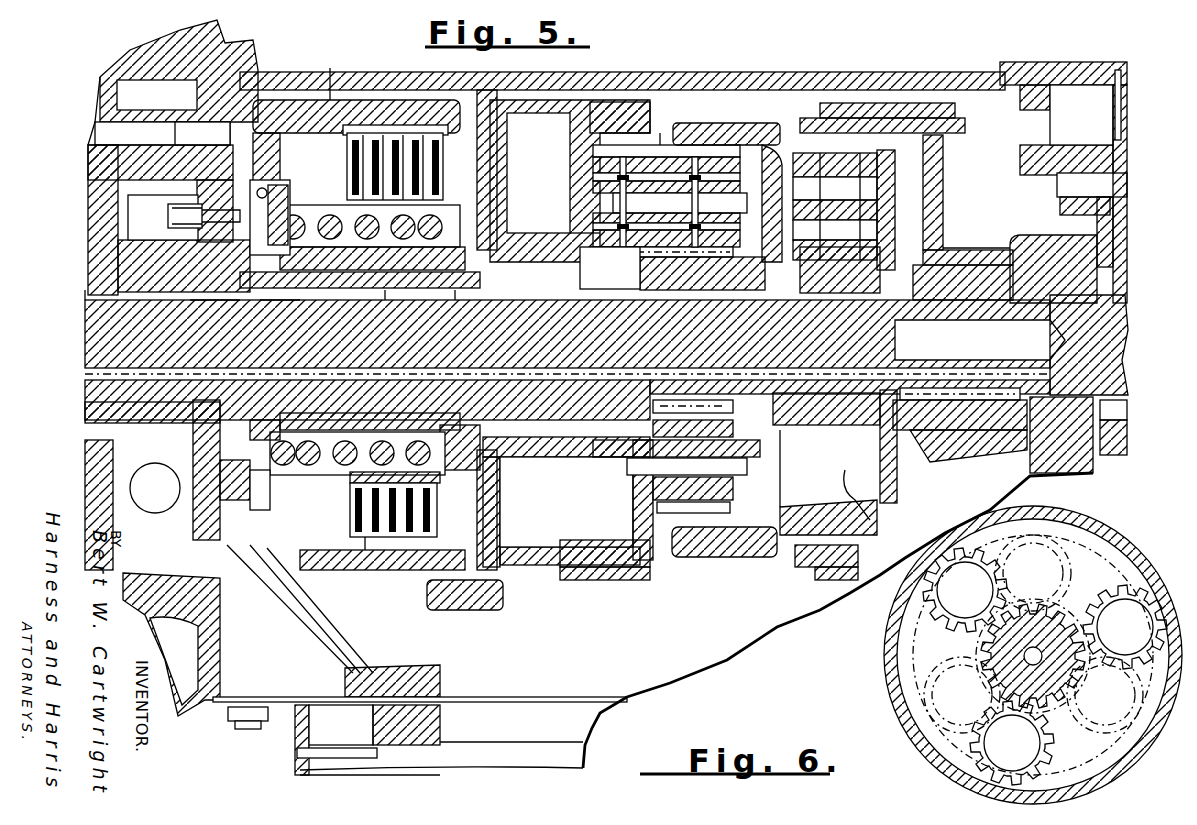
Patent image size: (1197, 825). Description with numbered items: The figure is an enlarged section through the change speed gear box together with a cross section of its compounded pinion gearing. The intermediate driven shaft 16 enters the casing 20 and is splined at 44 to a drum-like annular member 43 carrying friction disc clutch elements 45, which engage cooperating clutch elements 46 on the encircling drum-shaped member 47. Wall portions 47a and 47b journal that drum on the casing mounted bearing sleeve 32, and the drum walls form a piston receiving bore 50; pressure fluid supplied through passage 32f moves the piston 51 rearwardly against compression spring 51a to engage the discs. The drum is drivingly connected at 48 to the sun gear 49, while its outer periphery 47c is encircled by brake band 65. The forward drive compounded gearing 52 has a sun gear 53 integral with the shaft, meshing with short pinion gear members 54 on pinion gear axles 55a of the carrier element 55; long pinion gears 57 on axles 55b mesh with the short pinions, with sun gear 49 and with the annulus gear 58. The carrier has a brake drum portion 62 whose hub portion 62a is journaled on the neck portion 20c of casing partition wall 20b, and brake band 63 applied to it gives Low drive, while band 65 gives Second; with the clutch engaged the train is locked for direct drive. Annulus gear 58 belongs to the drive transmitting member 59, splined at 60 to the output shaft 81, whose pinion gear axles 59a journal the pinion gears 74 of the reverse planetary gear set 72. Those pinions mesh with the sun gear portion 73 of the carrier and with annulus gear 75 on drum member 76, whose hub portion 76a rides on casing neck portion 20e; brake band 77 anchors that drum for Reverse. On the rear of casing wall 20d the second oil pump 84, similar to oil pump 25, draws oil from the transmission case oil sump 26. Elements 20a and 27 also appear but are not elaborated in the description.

In FIG. 5, the intermediate driven shaft 16 is at (85, 322).
In FIG. 5, the casing 20 is at (445, 82).
In FIG. 5, the housing portion 20a is at (196, 97).
In FIG. 5, the casing partition wall 20b is at (504, 596).
In FIG. 5, the axially extending neck portion 20c is at (610, 268).
In FIG. 5, the casing wall 20d is at (1020, 468).
In FIG. 5, the casing neck portion 20e is at (1022, 248).
In FIG. 5, the oil pump 25 is at (82, 232).
In FIG. 5, the transmission case oil sump 26 is at (442, 768).
In FIG. 5, the bracket 27 is at (330, 682).
In FIG. 5, the casing mounted bearing sleeve 32 is at (209, 312).
In FIG. 5, the passage 32f is at (274, 312).
In FIG. 5, the drum-like annular member 43 is at (345, 214).
In FIG. 5, the spline 44 is at (390, 292).
In FIG. 5, the friction disc clutch elements 45 is at (402, 540).
In FIG. 5, the cooperating clutch elements 46 is at (385, 128).
In FIG. 5, the drum-shaped member 47 is at (294, 121).
In FIG. 5, the wall portion 47a is at (272, 510).
In FIG. 5, the wall portion 47b is at (357, 455).
In FIG. 5, the outer periphery 47c is at (368, 570).
In FIG. 5, the driving connection 48 is at (458, 292).
In FIG. 5, the sun gear 49 is at (592, 428).
In FIG. 6, the sun gear 49 is at (1040, 712).
In FIG. 5, the piston receiving bore 50 is at (278, 178).
In FIG. 5, the piston 51 is at (258, 484).
In FIG. 5, the compression spring 51a is at (358, 440).
In FIG. 5, the first set of compounded gearing 52 is at (663, 145).
In FIG. 5, the sun gear 53 is at (665, 288).
In FIG. 6, the sun gear 53 is at (975, 648).
In FIG. 5, the short pinion gear members 54 is at (652, 514).
In FIG. 6, the short pinion gear members 54 is at (1062, 590).
In FIG. 5, the carrier element 55 is at (790, 472).
In FIG. 5, the pinion gear axles 55a is at (680, 468).
In FIG. 5, the pinion gear axles 55b is at (662, 210).
In FIG. 5, the long pinion gears 57 is at (612, 150).
In FIG. 6, the long pinion gears 57 is at (950, 560).
In FIG. 5, the annulus gear 58 is at (740, 145).
In FIG. 6, the annulus gear 58 is at (1157, 575).
In FIG. 5, the drive transmitting member 59 is at (871, 506).
In FIG. 5, the pinion gear axles 59a is at (818, 183).
In FIG. 5, the splined connection 60 is at (968, 325).
In FIG. 5, the brake drum portion 62 is at (572, 156).
In FIG. 5, the hub portion 62a is at (530, 235).
In FIG. 5, the brake band 63 is at (572, 104).
In FIG. 5, the brake band 65 is at (335, 100).
In FIG. 5, the second set of planetary gearing 72 is at (805, 132).
In FIG. 5, the sun gear portion 73 is at (826, 406).
In FIG. 5, the pinion gears 74 is at (840, 270).
In FIG. 5, the annulus gear 75 is at (798, 556).
In FIG. 5, the drum member 76 is at (935, 176).
In FIG. 5, the hub portion 76a is at (972, 248).
In FIG. 5, the brake band 77 is at (890, 105).
In FIG. 5, the output shaft 81 is at (1126, 331).
In FIG. 5, the second oil pump 84 is at (1128, 244).